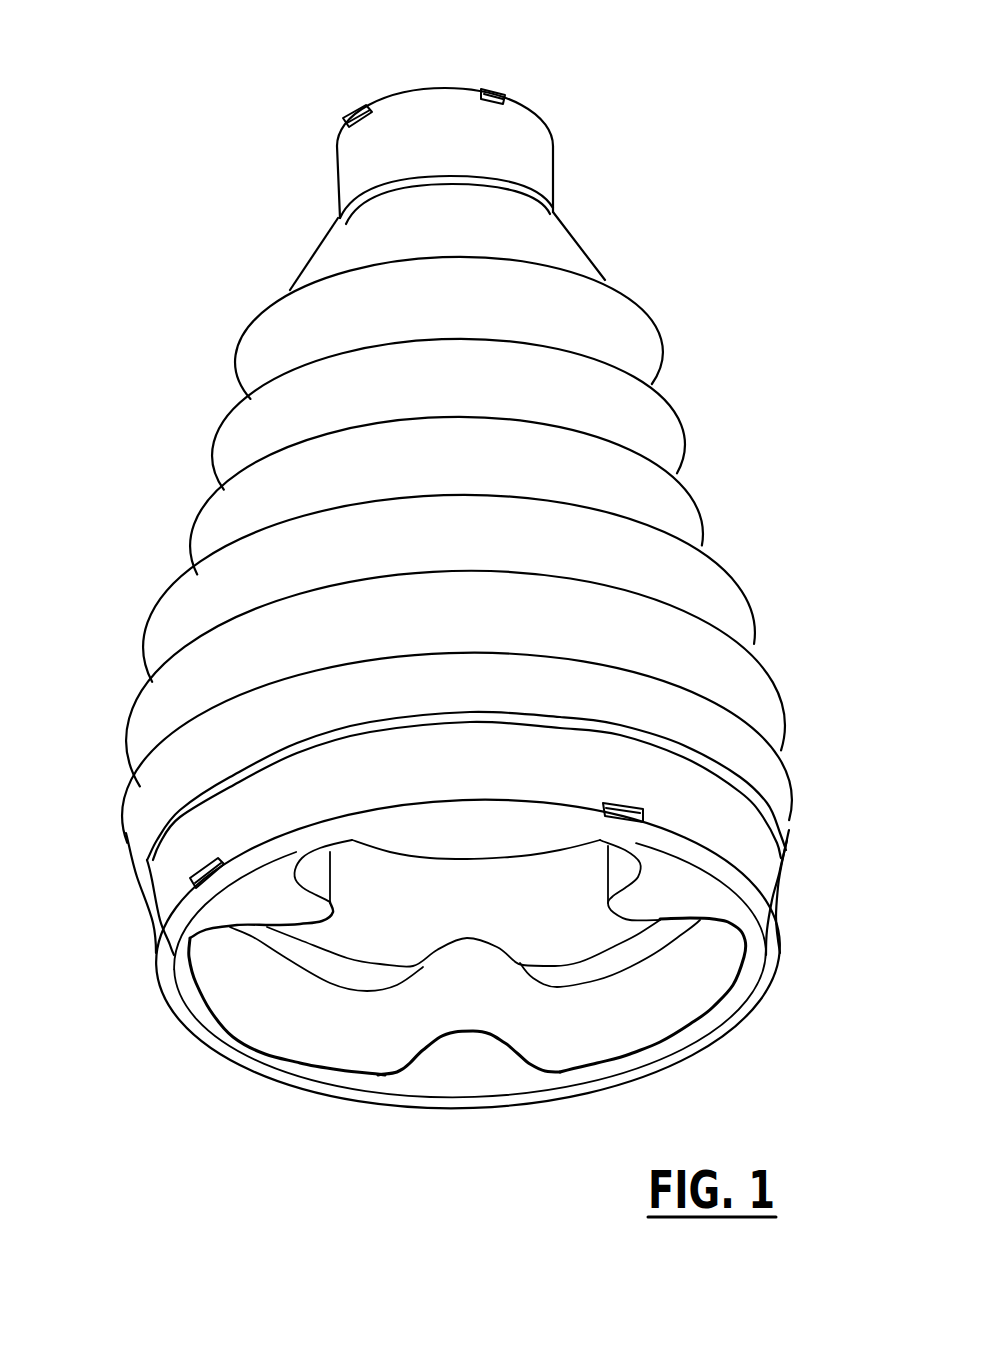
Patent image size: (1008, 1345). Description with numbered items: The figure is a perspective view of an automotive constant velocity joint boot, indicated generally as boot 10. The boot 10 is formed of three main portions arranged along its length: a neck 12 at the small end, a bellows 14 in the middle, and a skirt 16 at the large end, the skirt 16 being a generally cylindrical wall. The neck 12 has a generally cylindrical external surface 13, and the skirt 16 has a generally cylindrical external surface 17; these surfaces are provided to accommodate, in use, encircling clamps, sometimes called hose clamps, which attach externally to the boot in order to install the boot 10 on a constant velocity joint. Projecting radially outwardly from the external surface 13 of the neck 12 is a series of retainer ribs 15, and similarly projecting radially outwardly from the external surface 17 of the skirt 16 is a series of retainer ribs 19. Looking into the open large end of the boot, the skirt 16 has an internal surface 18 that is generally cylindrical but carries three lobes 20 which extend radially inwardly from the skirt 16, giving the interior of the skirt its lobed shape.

The automotive boot 10 is at (782, 385).
The neck 12 is at (300, 164).
The external surface of neck 13 is at (538, 159).
The bellows 14 is at (663, 347).
The retainer ribs 15 is at (500, 87).
The skirt 16 is at (740, 823).
The external surface of skirt 17 is at (190, 827).
The internal surface of skirt 18 is at (243, 1005).
The retainer ribs 19 is at (620, 800).
The lobes 20 is at (665, 890).